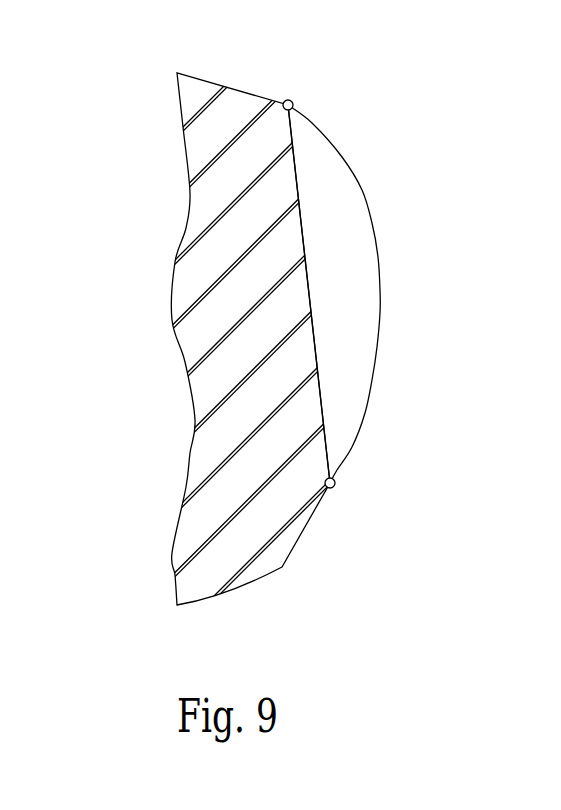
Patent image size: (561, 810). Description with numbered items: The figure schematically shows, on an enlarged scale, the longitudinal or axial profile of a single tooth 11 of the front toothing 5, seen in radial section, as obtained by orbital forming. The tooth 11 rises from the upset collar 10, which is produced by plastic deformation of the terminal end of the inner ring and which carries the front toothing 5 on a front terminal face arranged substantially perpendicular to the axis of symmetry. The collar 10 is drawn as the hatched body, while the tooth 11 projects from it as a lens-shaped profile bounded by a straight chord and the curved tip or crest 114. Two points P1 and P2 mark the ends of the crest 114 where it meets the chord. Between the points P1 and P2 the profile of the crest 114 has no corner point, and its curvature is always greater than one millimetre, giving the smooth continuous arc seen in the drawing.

The front toothing 5 is at (280, 337).
The upset collar 10 is at (203, 208).
The tooth 11 is at (379, 294).
The tip or crest 114 is at (381, 354).
The first point P1 is at (289, 100).
The second point P2 is at (333, 489).